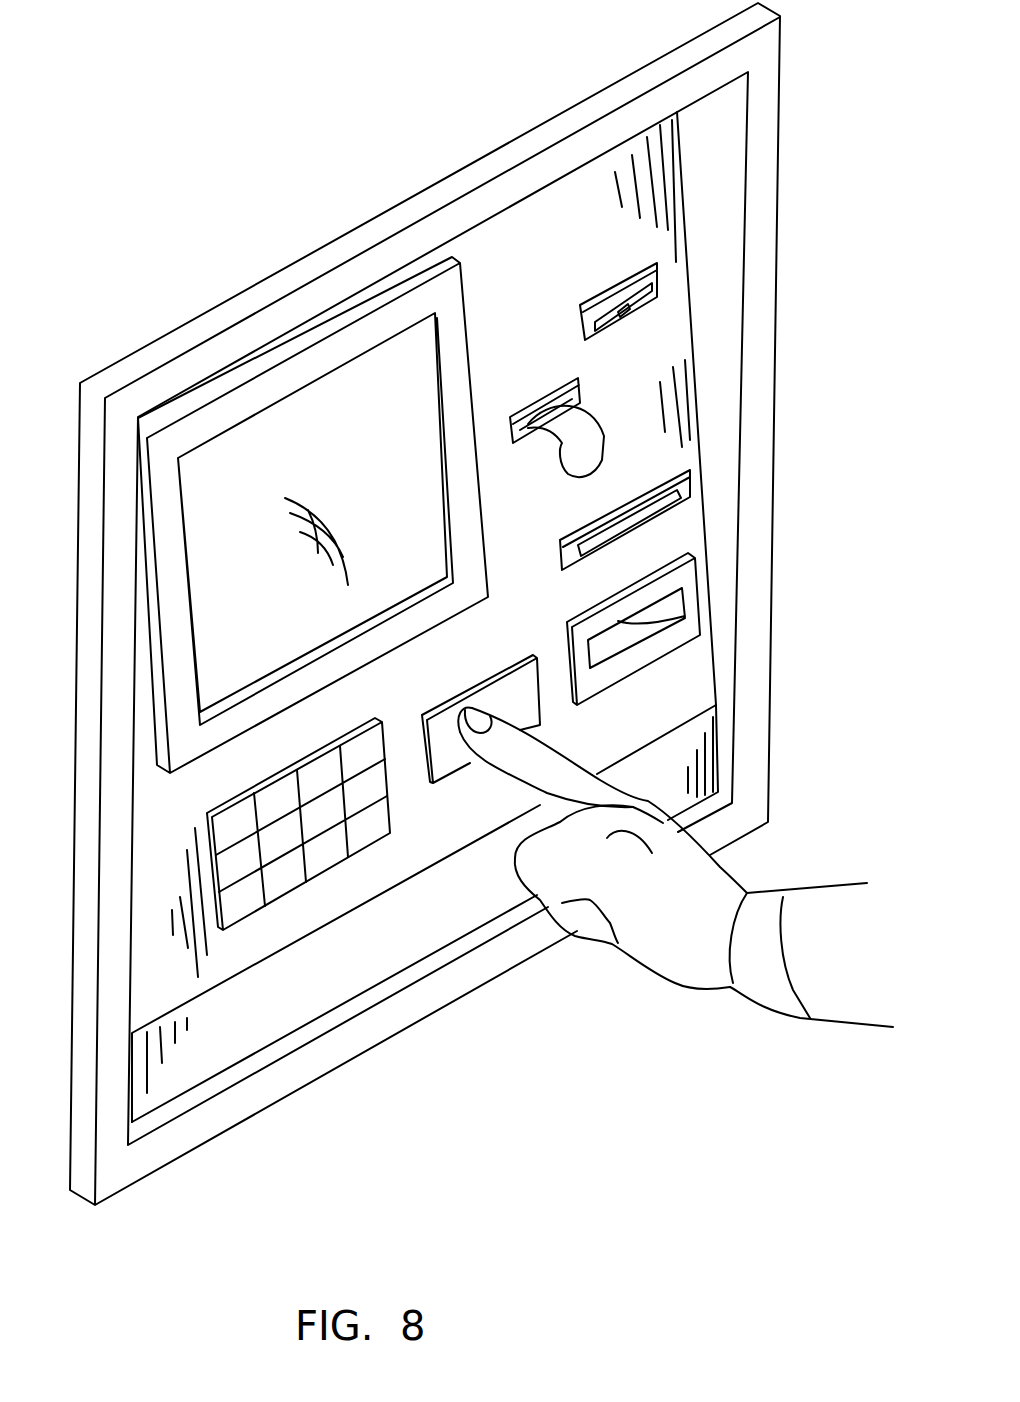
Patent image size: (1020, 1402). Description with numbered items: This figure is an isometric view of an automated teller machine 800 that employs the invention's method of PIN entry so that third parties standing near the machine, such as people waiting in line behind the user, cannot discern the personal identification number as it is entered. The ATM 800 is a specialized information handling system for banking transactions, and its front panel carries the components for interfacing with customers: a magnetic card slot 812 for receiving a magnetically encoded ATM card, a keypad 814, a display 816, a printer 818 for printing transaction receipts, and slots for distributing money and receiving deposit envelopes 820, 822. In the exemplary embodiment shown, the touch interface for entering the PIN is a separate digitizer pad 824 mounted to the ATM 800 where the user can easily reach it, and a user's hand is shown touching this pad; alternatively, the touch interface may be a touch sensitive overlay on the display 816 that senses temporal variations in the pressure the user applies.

The automated teller machine 800 is at (380, 143).
The magnetic card slot 812 is at (653, 263).
The keypad 814 is at (280, 877).
The display 816 is at (340, 415).
The printer 818 is at (585, 390).
The slot for distributing money 820 is at (650, 488).
The slot for receiving deposit envelopes 822 is at (683, 578).
The digitizer pad 824 is at (455, 758).